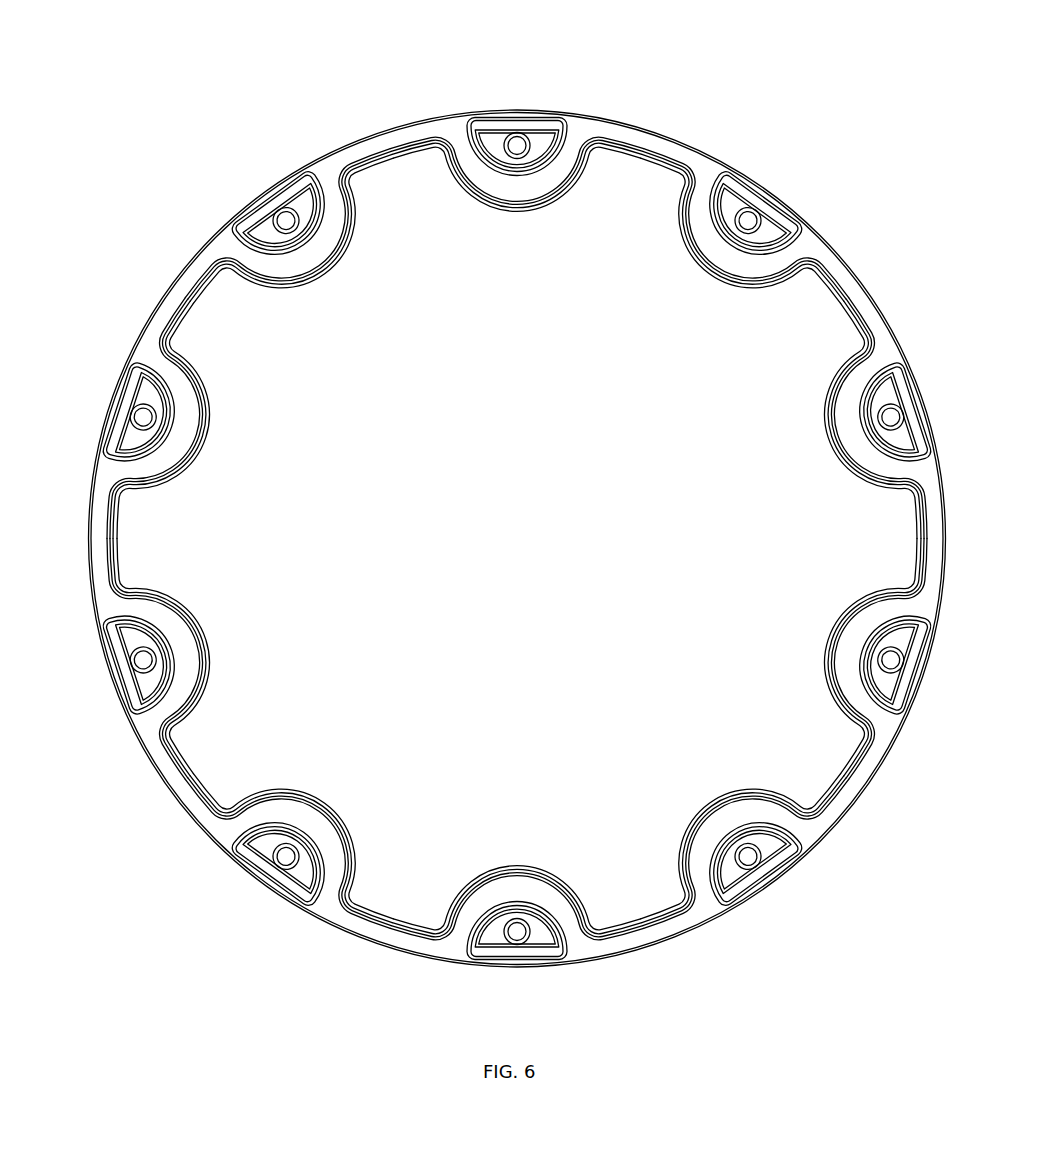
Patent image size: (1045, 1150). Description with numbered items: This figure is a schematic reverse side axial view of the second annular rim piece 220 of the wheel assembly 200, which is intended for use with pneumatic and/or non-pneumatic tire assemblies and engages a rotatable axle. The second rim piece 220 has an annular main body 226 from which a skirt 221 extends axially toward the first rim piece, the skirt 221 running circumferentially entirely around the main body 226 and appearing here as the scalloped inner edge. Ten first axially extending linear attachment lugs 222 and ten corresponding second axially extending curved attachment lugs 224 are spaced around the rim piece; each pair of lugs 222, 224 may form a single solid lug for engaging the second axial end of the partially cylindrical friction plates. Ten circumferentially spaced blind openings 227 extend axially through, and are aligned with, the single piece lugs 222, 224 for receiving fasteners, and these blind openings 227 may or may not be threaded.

The wheel assembly 200 is at (726, 93).
The second annular rim piece 220 is at (793, 137).
The skirt 221 is at (197, 772).
The first axially extending linear attachment lugs 222 is at (533, 130).
The second axially extending curved attachment lugs 224 is at (500, 162).
The annular main body 226 is at (330, 168).
The blind openings 227 is at (145, 657).